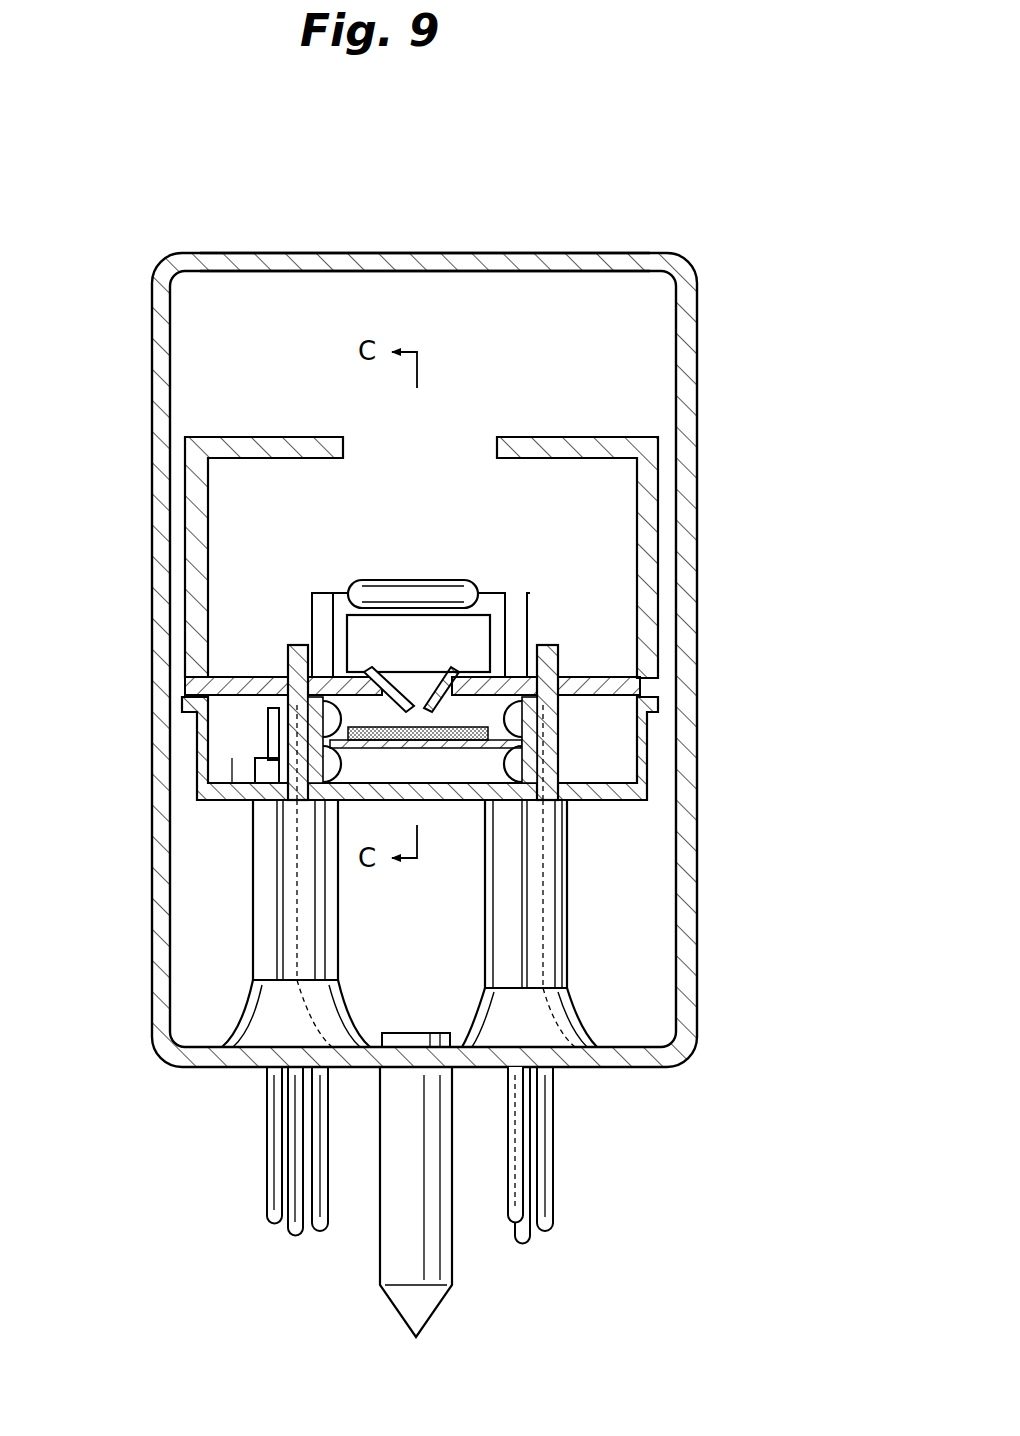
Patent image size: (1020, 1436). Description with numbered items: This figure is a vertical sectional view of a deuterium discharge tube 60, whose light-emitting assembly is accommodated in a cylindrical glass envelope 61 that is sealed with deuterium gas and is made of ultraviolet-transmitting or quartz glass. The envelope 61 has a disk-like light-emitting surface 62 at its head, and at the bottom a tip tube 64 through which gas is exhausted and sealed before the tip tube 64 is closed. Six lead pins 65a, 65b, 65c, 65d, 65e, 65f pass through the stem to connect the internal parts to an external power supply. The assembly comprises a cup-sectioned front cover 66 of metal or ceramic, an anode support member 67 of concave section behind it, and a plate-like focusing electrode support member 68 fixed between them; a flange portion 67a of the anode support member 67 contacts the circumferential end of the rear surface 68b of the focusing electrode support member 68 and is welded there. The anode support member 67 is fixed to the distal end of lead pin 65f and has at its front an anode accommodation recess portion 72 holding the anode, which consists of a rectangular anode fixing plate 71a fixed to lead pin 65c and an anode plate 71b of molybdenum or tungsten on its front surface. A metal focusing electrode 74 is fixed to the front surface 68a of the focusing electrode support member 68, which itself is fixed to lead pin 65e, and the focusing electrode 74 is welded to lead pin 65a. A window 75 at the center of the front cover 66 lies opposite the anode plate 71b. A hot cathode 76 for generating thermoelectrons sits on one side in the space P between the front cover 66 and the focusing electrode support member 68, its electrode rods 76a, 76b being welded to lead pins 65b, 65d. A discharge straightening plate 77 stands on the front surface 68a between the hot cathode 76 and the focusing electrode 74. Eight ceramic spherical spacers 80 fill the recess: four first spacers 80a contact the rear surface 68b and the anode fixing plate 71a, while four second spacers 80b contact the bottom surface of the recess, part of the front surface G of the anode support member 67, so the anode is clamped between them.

The deuterium discharge tube 60 is at (704, 236).
The envelope 61 is at (690, 525).
The light-emitting surface 62 is at (437, 253).
The tip tube 64 is at (447, 1283).
The lead pin 65a is at (518, 1213).
The lead pin 65b is at (544, 1158).
The lead pin 65c is at (528, 1240).
The lead pin 65d is at (320, 1232).
The lead pin 65e is at (272, 1220).
The lead pin 65f is at (295, 1236).
The front cover 66 is at (630, 440).
The anode support member 67 is at (627, 803).
The flange portion 67a is at (190, 702).
The focusing electrode support member 68 is at (640, 685).
The front surface of focusing electrode support member 68a is at (237, 676).
The rear surface of focusing electrode support member 68b is at (268, 721).
The anode fixing plate 71a is at (450, 803).
The anode plate 71b is at (418, 717).
The anode accommodation recess portion 72 is at (233, 757).
The focusing electrode 74 is at (372, 670).
The window 75 is at (445, 440).
The hot cathode 76 is at (462, 592).
The electrode rod 76a is at (331, 597).
The electrode rod 76b is at (515, 592).
The discharge straightening plate 77 is at (490, 640).
The spherical spacers 80 is at (432, 731).
The first spacers 80a is at (322, 720).
The second spacers 80b is at (330, 764).
The space P is at (615, 582).
The front surface of anode support member G is at (655, 690).